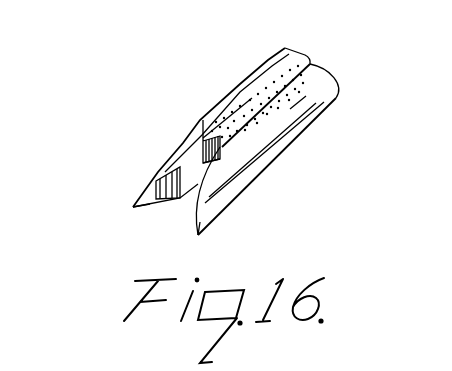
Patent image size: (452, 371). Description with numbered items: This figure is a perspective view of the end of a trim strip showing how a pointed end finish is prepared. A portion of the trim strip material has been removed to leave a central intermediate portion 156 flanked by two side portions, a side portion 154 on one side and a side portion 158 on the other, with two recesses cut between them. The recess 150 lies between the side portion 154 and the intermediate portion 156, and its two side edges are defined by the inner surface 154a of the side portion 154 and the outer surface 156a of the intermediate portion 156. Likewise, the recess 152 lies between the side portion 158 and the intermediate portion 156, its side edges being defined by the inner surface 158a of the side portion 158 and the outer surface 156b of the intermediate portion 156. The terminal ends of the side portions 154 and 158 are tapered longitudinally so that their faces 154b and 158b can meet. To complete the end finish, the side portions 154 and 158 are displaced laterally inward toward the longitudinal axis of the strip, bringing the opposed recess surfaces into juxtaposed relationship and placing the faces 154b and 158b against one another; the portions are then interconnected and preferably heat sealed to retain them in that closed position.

The recess 150 is at (201, 146).
The recess 152 is at (216, 156).
The side portion 154 is at (178, 147).
The inner surface 154a is at (160, 201).
The face 154b is at (147, 195).
The intermediate portion 156 is at (301, 54).
The outer surface 156a is at (203, 128).
The outer surface 156b is at (243, 126).
The side portion 158 is at (304, 117).
The inner surface 158a is at (220, 150).
The face 158b is at (197, 217).